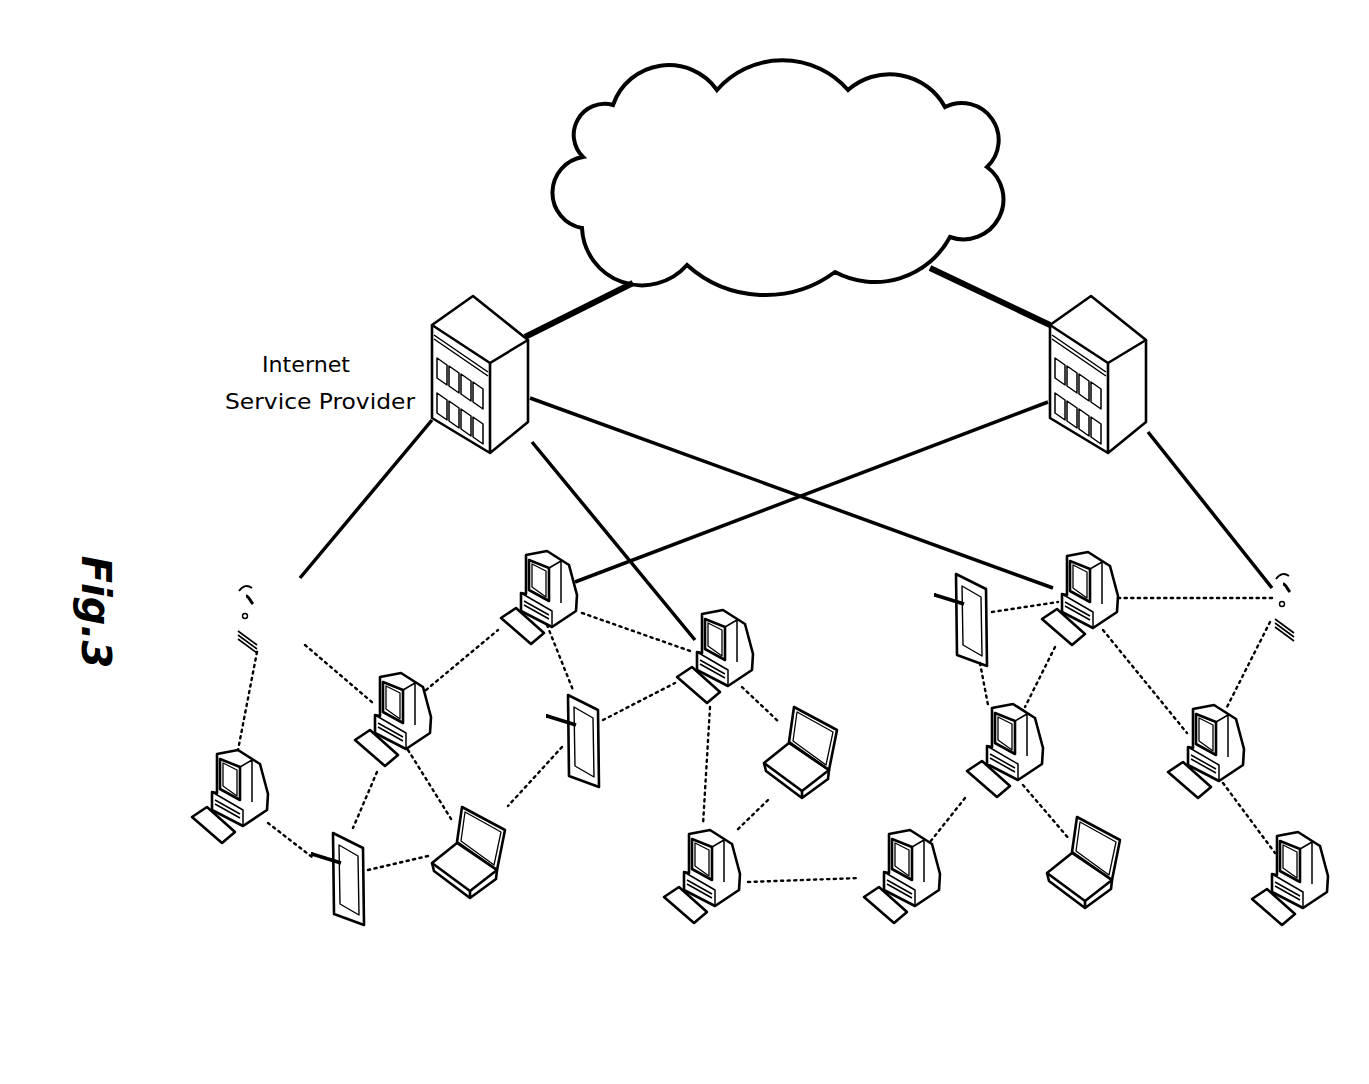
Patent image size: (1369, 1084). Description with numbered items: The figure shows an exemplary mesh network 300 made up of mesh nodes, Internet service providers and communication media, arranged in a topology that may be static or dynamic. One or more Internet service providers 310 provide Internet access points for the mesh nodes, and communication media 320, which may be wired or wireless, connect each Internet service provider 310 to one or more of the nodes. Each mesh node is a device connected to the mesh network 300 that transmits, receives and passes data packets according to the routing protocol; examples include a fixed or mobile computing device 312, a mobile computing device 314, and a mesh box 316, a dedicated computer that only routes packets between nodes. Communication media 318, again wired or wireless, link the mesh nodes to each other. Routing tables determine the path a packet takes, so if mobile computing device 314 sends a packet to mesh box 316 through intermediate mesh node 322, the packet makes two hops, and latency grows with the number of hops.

The mesh network 300 is at (1200, 238).
The Internet service provider 310 is at (1033, 451).
The computing device 312 is at (1032, 892).
The mobile computing device 314 is at (317, 930).
The mesh box 316 is at (232, 545).
The communication media 318 is at (434, 677).
The communication media 320 is at (891, 450).
The mesh node 322 is at (266, 756).